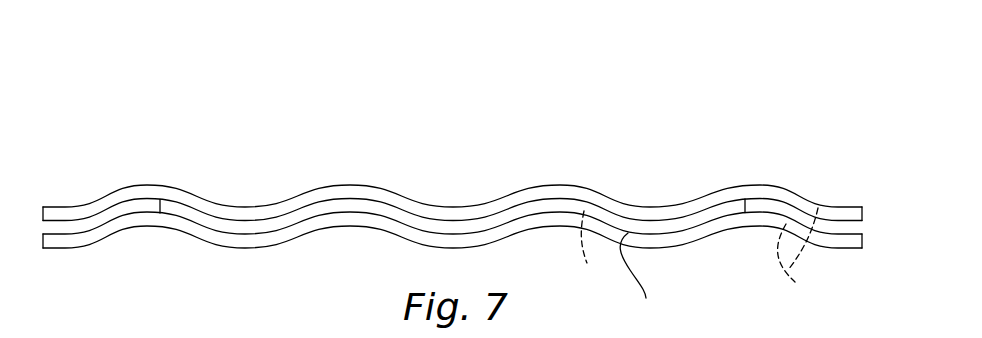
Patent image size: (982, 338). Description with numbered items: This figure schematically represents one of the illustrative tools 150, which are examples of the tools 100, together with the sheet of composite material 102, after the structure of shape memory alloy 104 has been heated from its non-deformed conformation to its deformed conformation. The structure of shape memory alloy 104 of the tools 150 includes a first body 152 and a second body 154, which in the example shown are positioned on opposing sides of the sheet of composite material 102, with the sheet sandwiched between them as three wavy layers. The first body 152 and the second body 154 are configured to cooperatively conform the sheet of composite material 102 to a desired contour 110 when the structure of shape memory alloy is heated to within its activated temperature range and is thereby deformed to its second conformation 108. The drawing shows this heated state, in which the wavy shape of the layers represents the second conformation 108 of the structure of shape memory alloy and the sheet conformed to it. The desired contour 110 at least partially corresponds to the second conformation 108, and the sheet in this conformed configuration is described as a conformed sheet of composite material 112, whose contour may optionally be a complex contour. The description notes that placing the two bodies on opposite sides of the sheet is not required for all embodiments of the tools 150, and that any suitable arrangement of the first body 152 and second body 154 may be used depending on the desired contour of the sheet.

The tools 150 is at (731, 84).
The tools 100 is at (786, 107).
The structure of shape memory alloy 104 is at (807, 178).
The first body 152 is at (283, 201).
The second body 154 is at (303, 240).
The sheet of composite material 102 is at (657, 237).
The desired contour 110 is at (584, 250).
The conformed sheet of composite material 112 is at (641, 277).
The second conformation 108 is at (807, 254).